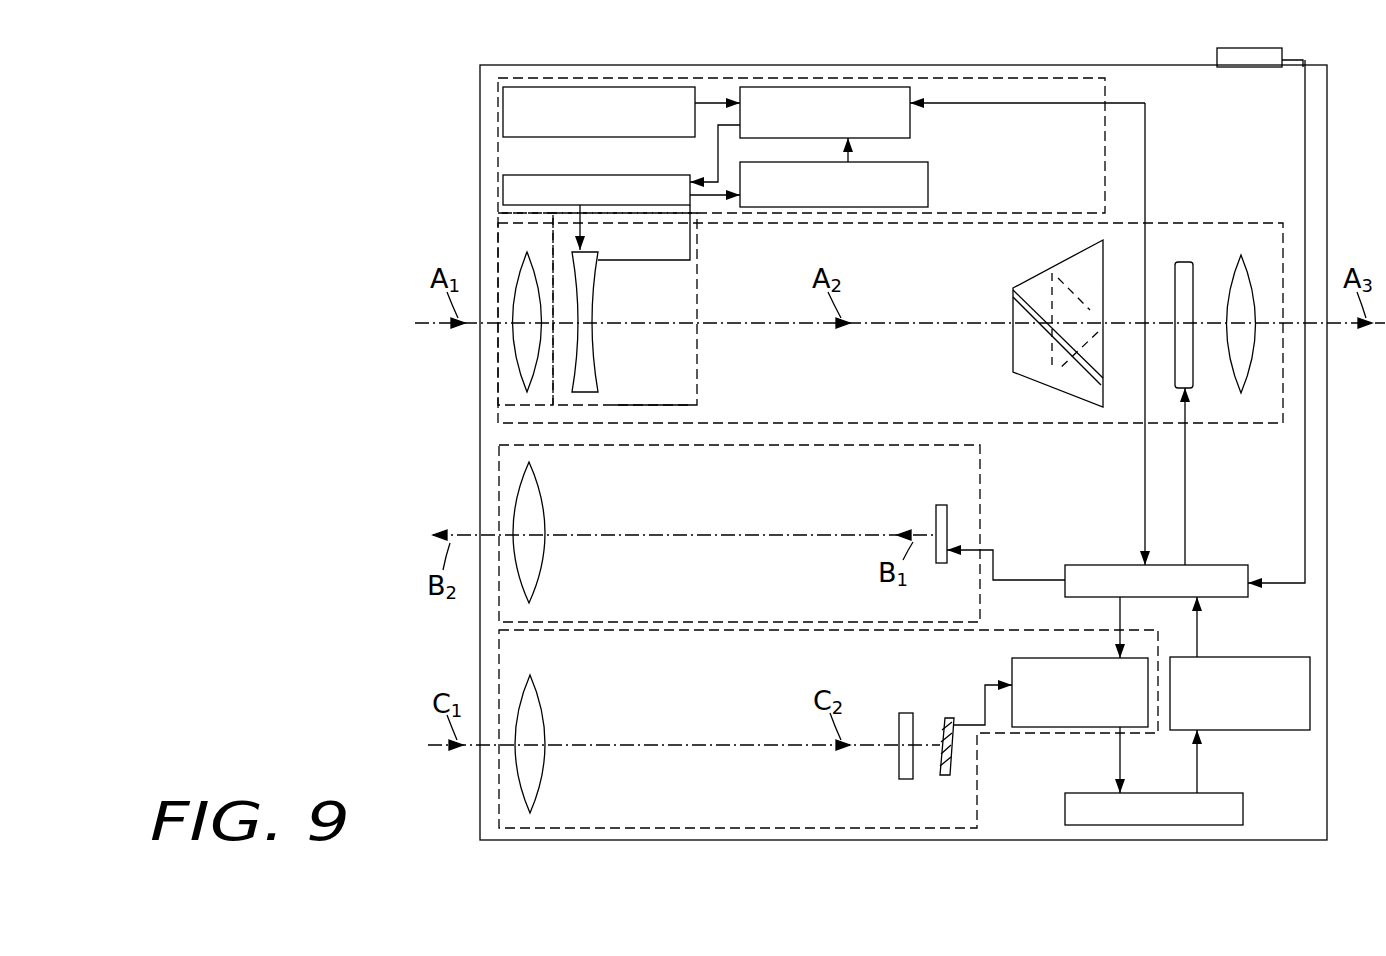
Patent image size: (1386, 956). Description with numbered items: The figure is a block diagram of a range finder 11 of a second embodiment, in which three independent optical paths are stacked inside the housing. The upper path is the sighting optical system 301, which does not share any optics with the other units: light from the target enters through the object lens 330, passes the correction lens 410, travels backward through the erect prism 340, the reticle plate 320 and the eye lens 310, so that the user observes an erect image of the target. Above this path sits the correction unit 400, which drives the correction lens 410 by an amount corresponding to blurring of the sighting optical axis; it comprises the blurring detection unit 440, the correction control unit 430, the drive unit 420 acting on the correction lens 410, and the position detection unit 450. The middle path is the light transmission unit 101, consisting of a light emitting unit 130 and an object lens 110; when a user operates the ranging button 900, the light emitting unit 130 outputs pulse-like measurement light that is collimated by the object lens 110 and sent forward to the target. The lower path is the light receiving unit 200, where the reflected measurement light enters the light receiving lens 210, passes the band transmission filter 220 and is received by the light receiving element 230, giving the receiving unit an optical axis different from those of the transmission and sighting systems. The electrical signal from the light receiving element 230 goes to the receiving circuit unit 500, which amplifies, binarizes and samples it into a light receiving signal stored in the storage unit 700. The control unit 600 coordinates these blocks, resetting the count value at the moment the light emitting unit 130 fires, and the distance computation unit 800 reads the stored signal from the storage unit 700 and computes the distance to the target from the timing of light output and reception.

The range finder 11 is at (475, 50).
The light transmission unit 101 is at (970, 613).
The object lens 110 is at (535, 463).
The light emitting unit 130 is at (943, 505).
The light receiving unit 200 is at (960, 820).
The light receiving lens 210 is at (541, 683).
The band transmission filter 220 is at (906, 713).
The light receiving element 230 is at (947, 718).
The sighting optical system 301 is at (998, 405).
The eye lens 310 is at (1250, 259).
The reticle plate 320 is at (1193, 262).
The object lens 330 is at (523, 309).
The erect prism 340 is at (1035, 275).
The correction unit 400 is at (1068, 202).
The correction lens 410 is at (596, 256).
The drive unit 420 is at (596, 176).
The correction control unit 430 is at (900, 87).
The blurring detection unit 440 is at (613, 87).
The position detection unit 450 is at (912, 163).
The receiving circuit unit 500 is at (1027, 659).
The control unit 600 is at (1232, 565).
The storage unit 700 is at (1230, 793).
The distance computation unit 800 is at (1272, 657).
The ranging button 900 is at (1250, 47).